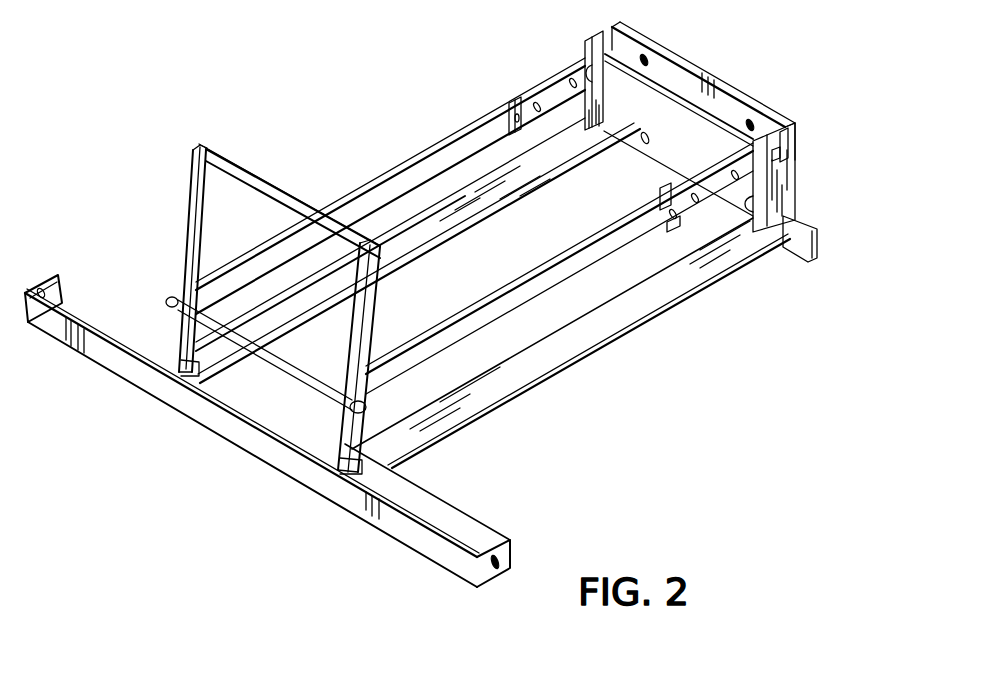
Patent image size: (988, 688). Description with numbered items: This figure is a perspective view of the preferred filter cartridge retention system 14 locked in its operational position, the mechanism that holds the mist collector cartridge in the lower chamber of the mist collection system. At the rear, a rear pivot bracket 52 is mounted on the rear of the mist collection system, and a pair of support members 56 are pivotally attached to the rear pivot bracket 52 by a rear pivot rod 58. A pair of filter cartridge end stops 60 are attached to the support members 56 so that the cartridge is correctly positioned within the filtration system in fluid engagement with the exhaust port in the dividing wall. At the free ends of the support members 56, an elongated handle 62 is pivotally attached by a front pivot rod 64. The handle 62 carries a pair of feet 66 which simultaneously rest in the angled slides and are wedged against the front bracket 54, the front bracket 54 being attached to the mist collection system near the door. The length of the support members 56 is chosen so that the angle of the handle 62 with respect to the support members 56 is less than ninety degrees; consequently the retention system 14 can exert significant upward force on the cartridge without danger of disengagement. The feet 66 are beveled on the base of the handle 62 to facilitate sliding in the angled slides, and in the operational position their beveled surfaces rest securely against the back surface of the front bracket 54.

The filter cartridge retention system 14 is at (444, 293).
The rear pivot bracket 52 is at (421, 303).
The front bracket 54 is at (267, 431).
The support members 56 is at (493, 263).
The rear pivot rod 58 is at (701, 141).
The filter cartridge end stops 60 is at (594, 132).
The handle 62 is at (269, 289).
The front pivot rod 64 is at (236, 355).
The feet 66 is at (418, 342).